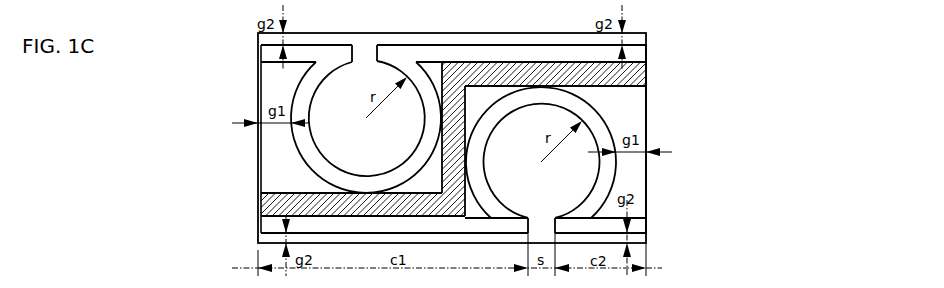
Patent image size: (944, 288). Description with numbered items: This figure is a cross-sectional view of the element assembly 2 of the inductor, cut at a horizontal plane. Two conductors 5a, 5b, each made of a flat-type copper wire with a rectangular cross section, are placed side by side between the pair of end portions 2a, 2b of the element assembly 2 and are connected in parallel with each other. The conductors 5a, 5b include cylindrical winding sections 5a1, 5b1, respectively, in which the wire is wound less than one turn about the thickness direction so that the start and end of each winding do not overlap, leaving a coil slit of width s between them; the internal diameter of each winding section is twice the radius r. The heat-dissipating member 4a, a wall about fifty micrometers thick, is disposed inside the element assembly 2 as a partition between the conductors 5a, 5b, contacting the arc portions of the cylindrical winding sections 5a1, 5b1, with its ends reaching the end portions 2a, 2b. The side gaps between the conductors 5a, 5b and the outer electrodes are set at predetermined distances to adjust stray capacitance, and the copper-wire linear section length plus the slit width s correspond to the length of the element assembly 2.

The element assembly 2 is at (246, 95).
The end portion 2a is at (275, 157).
The end portion 2b is at (649, 190).
The heat-dissipating member 4a is at (647, 80).
The conductor 5a is at (463, 225).
The cylindrical winding section 5a1 is at (618, 110).
The conductor 5b is at (508, 46).
The cylindrical winding section 5b1 is at (276, 160).